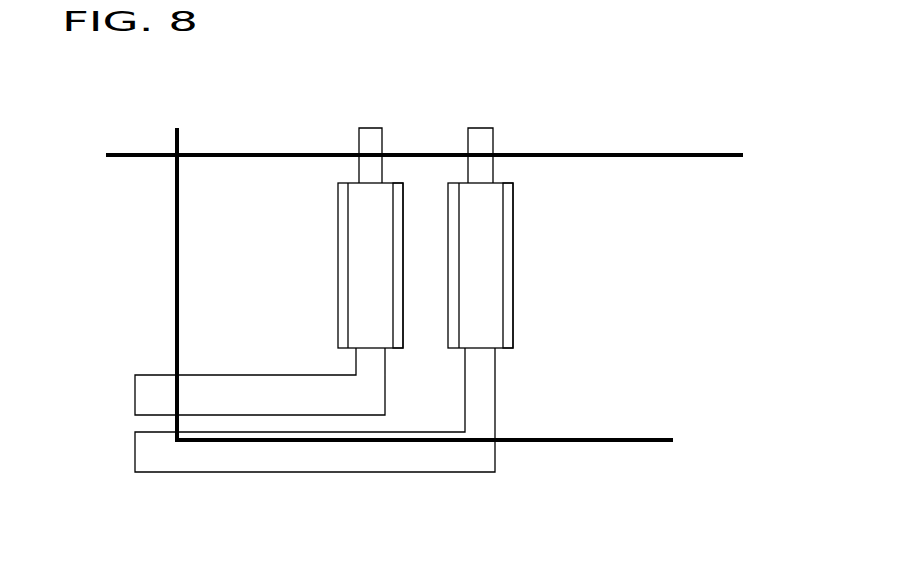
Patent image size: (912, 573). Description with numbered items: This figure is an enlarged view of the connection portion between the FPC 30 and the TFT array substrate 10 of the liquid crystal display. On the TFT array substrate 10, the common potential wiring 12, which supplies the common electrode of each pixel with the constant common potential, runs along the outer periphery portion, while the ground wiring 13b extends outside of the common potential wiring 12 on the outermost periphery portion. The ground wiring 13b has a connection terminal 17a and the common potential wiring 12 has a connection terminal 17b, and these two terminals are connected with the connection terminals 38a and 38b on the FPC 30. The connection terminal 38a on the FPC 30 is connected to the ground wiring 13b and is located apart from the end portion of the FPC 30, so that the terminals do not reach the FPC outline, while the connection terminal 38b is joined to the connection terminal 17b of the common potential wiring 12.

The TFT array substrate 10 is at (145, 153).
The FPC 30 is at (625, 443).
The connection terminal 38a is at (362, 233).
The connection terminal 38b is at (490, 267).
The connection terminal 17a is at (403, 336).
The connection terminal 17b is at (514, 336).
The ground wiring 13b is at (148, 386).
The common potential wiring 12 is at (303, 462).